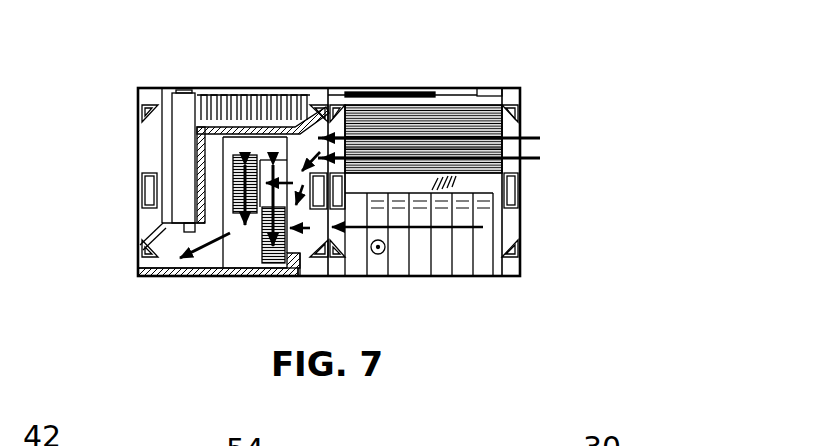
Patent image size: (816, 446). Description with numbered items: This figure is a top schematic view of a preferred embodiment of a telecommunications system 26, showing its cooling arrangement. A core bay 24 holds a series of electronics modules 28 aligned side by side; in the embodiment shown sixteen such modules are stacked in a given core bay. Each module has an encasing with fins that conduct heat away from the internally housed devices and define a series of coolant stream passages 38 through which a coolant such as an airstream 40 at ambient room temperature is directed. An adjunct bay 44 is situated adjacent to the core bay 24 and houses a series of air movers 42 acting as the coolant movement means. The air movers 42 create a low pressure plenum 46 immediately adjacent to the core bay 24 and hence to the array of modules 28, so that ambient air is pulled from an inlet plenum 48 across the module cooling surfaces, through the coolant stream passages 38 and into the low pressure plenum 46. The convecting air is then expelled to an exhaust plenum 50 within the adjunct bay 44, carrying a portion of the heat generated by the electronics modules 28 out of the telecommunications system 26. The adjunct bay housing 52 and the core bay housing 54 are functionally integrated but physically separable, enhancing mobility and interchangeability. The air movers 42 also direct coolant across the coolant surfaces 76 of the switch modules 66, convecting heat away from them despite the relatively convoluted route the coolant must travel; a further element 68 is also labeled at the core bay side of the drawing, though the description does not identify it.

The core bay 24 is at (405, 178).
The telecommunications system 26 is at (542, 266).
The electronics modules 28 is at (443, 120).
The coolant stream passage 38 is at (513, 108).
The airstream 40 is at (541, 138).
The air movers 42 is at (237, 154).
The adjunct bay 44 is at (216, 186).
The low pressure plenum 46 is at (303, 215).
The inlet plenum 48 is at (512, 147).
The exhaust plenum 50 is at (165, 262).
The adjunct bay housing 52 is at (150, 88).
The core bay housing 54 is at (442, 277).
The switch modules 66 is at (377, 265).
The mounting block 68 is at (498, 192).
The coolant surfaces 76 is at (412, 276).